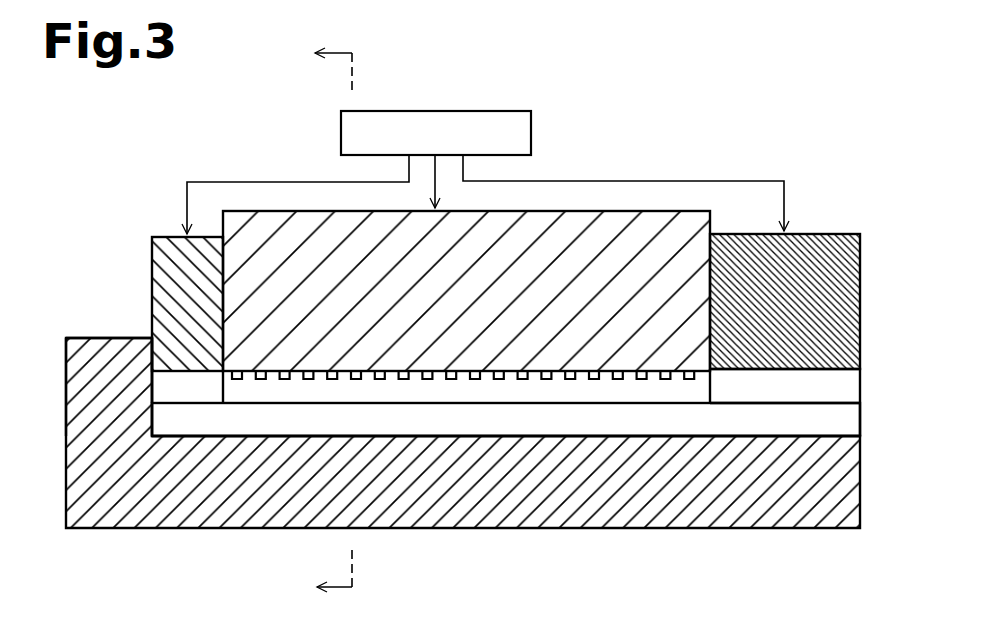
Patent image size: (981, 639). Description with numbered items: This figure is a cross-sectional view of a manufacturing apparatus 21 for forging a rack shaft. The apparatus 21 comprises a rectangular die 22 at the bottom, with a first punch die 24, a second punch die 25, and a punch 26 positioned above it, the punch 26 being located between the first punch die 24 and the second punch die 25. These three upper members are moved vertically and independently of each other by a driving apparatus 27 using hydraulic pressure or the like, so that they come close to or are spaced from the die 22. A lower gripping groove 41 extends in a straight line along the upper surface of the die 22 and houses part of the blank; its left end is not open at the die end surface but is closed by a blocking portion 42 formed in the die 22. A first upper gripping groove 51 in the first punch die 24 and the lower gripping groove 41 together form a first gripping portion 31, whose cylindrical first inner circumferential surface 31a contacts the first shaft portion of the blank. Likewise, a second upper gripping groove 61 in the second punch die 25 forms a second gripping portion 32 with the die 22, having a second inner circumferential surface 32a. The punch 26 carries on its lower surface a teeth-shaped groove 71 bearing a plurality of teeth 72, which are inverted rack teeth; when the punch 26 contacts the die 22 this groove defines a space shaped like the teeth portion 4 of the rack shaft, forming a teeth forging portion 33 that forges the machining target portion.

The manufacturing apparatus 21 is at (60, 168).
The die 22 is at (66, 440).
The first punch die 24 is at (164, 236).
The second punch die 25 is at (818, 234).
The punch 26 is at (590, 210).
The driving apparatus 27 is at (514, 109).
The first gripping portion 31 is at (116, 322).
The first inner circumferential surface 31a is at (158, 383).
The second gripping portion 32 is at (864, 304).
The second inner circumferential surface 32a is at (840, 389).
The teeth forging portion 33 is at (663, 208).
The lower gripping groove 41 is at (460, 428).
The blocking portion 42 is at (78, 412).
The first upper gripping groove 51 is at (180, 371).
The second upper gripping groove 61 is at (776, 371).
The teeth-shaped groove 71 is at (447, 376).
The teeth 72 is at (374, 392).
The teeth portion 4 is at (321, 320).